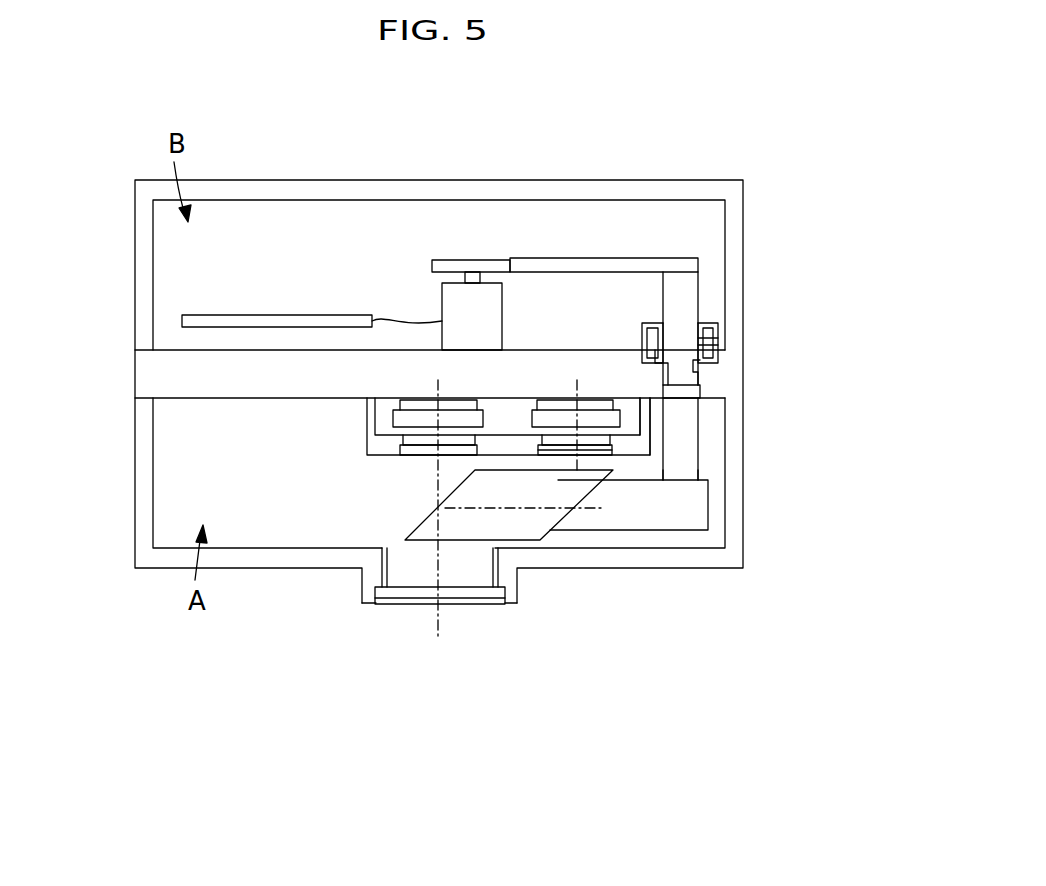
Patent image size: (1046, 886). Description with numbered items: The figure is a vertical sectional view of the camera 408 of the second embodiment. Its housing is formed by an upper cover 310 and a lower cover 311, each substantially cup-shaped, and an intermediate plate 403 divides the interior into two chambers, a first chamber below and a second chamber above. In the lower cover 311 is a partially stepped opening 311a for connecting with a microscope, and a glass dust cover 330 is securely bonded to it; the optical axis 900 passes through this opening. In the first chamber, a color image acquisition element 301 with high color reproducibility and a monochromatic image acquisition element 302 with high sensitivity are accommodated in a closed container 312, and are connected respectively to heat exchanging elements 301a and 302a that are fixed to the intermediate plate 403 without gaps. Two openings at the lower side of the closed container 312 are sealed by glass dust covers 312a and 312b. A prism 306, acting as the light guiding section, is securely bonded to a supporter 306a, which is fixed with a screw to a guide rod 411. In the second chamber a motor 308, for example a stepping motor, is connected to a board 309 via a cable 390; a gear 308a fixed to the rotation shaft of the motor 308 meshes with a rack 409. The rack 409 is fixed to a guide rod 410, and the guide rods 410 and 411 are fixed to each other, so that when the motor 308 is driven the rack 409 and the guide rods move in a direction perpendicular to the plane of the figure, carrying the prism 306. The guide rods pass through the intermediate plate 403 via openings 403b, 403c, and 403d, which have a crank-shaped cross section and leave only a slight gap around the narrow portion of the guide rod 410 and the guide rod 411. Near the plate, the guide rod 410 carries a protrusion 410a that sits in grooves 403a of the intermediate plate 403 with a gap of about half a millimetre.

The camera 408 is at (630, 140).
The upper cover 310 is at (735, 200).
The lower cover 311 is at (147, 507).
The opening 311a is at (370, 578).
The glass dust cover 330 is at (387, 600).
The optical axis 900 is at (442, 622).
The board 309 is at (250, 315).
The cable 390 is at (398, 318).
The motor 308 is at (490, 315).
The gear 308a is at (485, 260).
The rack 409 is at (700, 266).
The guide rod 410 is at (690, 285).
The protrusion 410a is at (718, 327).
The intermediate plate 403 is at (620, 360).
The grooves 403a is at (700, 340).
The opening 403b is at (700, 405).
The opening 403c is at (700, 378).
The opening 403d is at (665, 372).
The monochromatic image acquisition element 302 is at (640, 410).
The heat exchanging element 302a is at (620, 405).
The closed container 312 is at (367, 441).
The color image acquisition element 301 is at (393, 416).
The heat exchanging element 301a is at (392, 406).
The glass dust cover 312a is at (405, 452).
The glass dust cover 312b is at (595, 455).
The prism 306 is at (540, 532).
The supporter 306a is at (663, 520).
The guide rod 411 is at (688, 476).